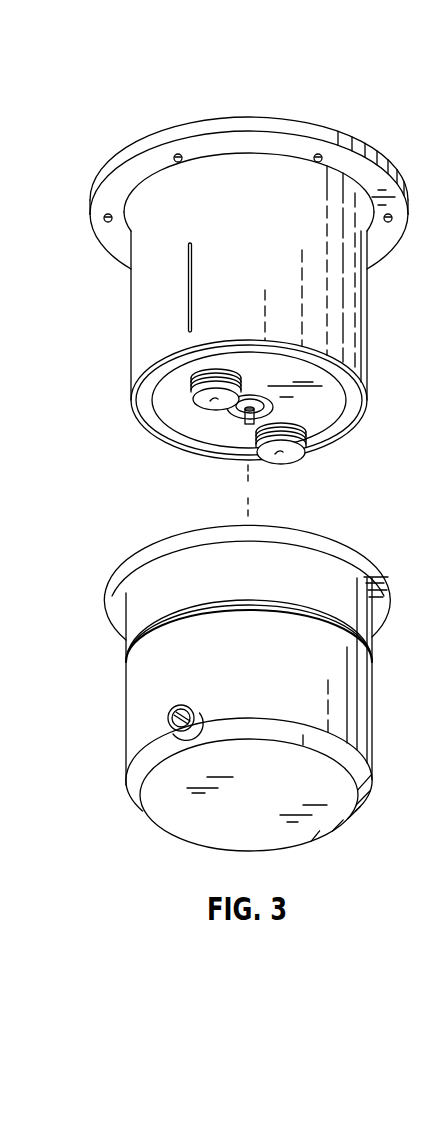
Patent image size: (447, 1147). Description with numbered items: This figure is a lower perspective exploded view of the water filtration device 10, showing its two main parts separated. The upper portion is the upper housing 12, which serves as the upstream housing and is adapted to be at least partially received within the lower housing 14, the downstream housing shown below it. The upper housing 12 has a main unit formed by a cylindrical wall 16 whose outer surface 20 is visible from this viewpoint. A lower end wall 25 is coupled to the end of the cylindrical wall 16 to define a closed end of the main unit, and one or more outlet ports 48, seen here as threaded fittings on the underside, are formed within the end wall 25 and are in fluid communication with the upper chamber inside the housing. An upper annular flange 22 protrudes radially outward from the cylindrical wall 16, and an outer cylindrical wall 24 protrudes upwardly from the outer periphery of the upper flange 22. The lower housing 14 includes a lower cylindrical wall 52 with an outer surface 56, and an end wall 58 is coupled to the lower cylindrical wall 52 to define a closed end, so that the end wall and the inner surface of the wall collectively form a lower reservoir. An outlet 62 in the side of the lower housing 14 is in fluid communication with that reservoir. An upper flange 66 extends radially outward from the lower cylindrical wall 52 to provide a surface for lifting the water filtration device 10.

The water filtration device 10 is at (315, 72).
The upper housing 12 is at (115, 304).
The lower housing 14 is at (116, 751).
The cylindrical wall 16 is at (366, 290).
The outer surface 20 is at (350, 325).
The upper annular flange 22 is at (110, 238).
The outer cylindrical wall 24 is at (130, 152).
The lower end wall 25 is at (332, 415).
The outlet ports 48 is at (212, 402).
The lower cylindrical wall 52 is at (133, 684).
The outer surface 56 is at (363, 697).
The end wall 58 is at (307, 832).
The outlet 62 is at (168, 720).
The upper flange 66 is at (112, 592).